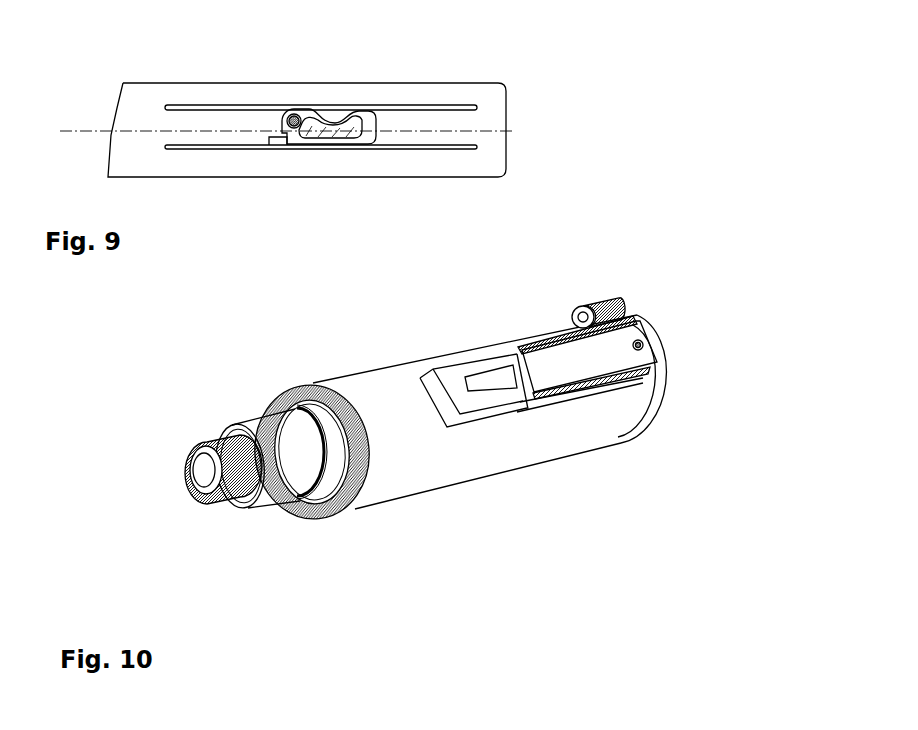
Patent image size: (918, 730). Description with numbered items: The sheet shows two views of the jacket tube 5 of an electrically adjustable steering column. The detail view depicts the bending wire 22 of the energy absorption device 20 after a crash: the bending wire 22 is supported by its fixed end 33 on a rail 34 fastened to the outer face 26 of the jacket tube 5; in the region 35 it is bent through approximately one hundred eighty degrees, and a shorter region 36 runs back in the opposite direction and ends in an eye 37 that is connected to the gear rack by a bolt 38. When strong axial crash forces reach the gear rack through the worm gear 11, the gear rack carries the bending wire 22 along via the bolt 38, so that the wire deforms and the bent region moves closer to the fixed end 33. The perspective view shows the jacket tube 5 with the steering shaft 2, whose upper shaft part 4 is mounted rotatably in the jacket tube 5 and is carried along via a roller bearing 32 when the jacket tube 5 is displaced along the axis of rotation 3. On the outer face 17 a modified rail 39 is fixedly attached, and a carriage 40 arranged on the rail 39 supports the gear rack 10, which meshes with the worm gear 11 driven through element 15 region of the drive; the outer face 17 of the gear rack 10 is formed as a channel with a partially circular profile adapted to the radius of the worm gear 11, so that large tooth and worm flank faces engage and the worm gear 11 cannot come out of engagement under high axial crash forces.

In FIG. 10, the steering shaft 2 is at (204, 432).
In FIG. 9, the axis of rotation 3 is at (412, 130).
In FIG. 10, the upper shaft part 4 is at (277, 492).
In FIG. 9, the jacket tube 5 is at (262, 95).
In FIG. 10, the jacket tube 5 is at (388, 383).
In FIG. 10, the gear rack 10 is at (552, 337).
In FIG. 10, the worm gear 11 is at (597, 300).
In FIG. 10, the roller pin 15 is at (580, 316).
In FIG. 10, the outer face 17 is at (535, 352).
In FIG. 9, the energy absorption device 20 is at (338, 97).
In FIG. 9, the bending wire 22 is at (323, 143).
In FIG. 9, the outer face of the jacket tube 26 is at (208, 157).
In FIG. 10, the outer face of the jacket tube 26 is at (478, 357).
In FIG. 10, the roller bearing 32 is at (299, 387).
In FIG. 9, the fixed end 33 is at (277, 145).
In FIG. 9, the rail 34 is at (215, 108).
In FIG. 9, the region 35 is at (370, 147).
In FIG. 9, the shorter region 36 is at (347, 115).
In FIG. 9, the eye 37 is at (305, 115).
In FIG. 9, the bolt 38 is at (292, 135).
In FIG. 10, the modified rail 39 is at (482, 403).
In FIG. 10, the carriage 40 is at (590, 367).